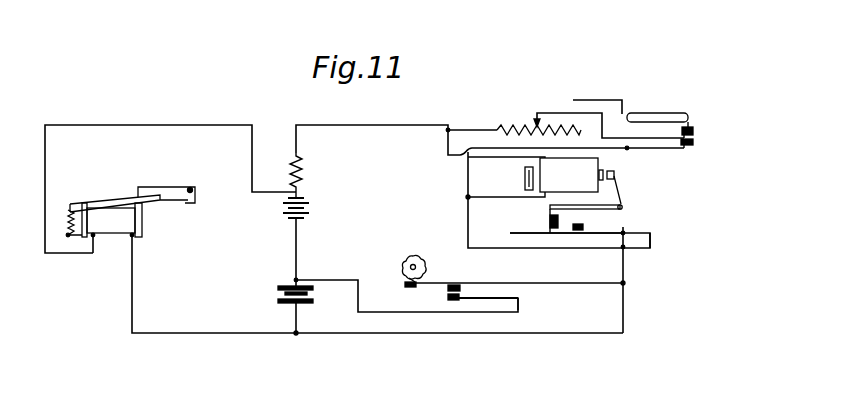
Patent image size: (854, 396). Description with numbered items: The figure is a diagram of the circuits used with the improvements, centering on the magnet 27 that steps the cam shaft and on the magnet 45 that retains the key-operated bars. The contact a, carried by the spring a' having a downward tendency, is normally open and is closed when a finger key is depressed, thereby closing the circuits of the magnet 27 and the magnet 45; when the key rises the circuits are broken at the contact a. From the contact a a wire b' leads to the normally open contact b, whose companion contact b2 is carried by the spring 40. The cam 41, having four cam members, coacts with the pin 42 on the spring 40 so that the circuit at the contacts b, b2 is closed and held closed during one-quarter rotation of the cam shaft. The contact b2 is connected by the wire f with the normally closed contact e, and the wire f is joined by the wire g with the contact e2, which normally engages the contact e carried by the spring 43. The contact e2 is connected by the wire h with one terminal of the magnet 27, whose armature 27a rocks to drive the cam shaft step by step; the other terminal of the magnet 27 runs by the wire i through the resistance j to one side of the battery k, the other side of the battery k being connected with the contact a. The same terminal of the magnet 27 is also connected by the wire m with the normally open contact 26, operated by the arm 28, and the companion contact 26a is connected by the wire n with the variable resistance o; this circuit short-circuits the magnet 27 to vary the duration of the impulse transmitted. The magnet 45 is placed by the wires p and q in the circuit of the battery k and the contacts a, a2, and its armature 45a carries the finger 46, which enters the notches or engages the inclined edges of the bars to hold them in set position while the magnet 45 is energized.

The wire q is at (170, 174).
The wire i is at (490, 125).
The wire p is at (377, 285).
The wire g is at (385, 335).
The wire f is at (626, 278).
The wire h is at (651, 240).
The resistance j is at (302, 171).
The battery k is at (306, 239).
The spring a' is at (282, 274).
The contact a is at (313, 291).
The contact a2 is at (278, 298).
The wire b' is at (406, 284).
The contact b is at (462, 334).
The contact b2 is at (448, 296).
The spring 40 is at (440, 287).
The cam 41 is at (412, 253).
The pin 42 is at (404, 287).
The wire m is at (467, 183).
The magnet 27 is at (534, 178).
The armature 27a is at (614, 173).
The spring 43 is at (514, 228).
The contact e2 is at (620, 211).
The contact e is at (577, 232).
The variable resistance o is at (502, 126).
The wire n is at (540, 110).
The arm 28 is at (630, 108).
The contact 26a is at (695, 137).
The contact 26 is at (695, 143).
The magnet 45 is at (115, 237).
The armature 45a is at (113, 195).
The finger 46 is at (192, 206).